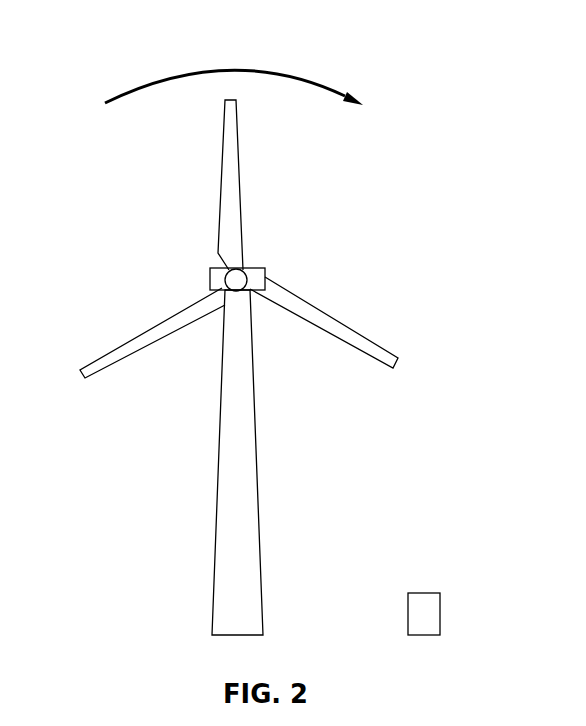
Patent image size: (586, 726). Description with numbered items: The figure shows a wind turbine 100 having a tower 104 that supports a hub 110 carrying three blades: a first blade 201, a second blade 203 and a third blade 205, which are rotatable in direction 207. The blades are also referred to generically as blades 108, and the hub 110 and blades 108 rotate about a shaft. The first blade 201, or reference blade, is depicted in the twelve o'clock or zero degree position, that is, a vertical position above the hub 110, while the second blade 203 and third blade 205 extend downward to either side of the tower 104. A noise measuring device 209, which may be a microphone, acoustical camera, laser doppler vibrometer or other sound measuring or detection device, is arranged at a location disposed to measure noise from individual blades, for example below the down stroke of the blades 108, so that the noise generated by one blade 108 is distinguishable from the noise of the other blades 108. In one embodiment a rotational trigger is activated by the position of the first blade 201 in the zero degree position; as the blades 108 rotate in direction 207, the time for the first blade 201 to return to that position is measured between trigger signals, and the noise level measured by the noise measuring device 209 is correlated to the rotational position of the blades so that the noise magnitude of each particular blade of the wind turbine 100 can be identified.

The wind turbine 100 is at (239, 367).
The tower 104 is at (245, 488).
The blade 108 is at (351, 322).
The hub 110 is at (238, 280).
The first blade 201 is at (233, 173).
The second blade 203 is at (307, 312).
The third blade 205 is at (158, 322).
The direction 207 is at (228, 68).
The noise measuring device 209 is at (440, 612).